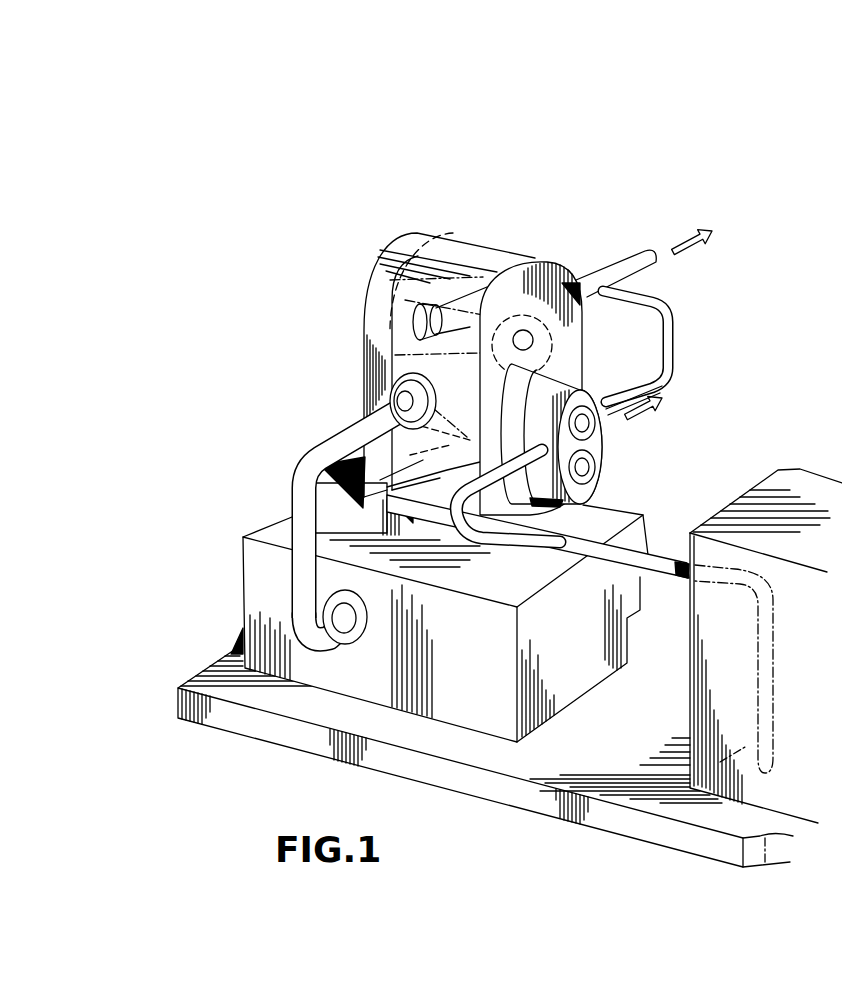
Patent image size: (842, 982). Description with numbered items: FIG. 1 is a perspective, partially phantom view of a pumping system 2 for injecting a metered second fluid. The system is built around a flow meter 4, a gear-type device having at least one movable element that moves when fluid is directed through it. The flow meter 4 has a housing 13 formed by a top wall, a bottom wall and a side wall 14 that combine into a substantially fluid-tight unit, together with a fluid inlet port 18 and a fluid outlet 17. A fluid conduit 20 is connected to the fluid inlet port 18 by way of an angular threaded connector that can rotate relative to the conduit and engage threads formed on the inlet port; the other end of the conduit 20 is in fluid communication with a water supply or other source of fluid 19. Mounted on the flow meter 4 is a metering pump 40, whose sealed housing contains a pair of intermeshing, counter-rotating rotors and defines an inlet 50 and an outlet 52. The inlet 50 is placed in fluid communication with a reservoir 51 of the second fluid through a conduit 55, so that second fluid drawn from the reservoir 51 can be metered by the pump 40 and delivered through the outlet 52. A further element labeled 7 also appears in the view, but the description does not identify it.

The pumping system 2 is at (495, 310).
The flow meter 4 is at (530, 247).
The guide plate 7 is at (640, 265).
The housing 13 is at (556, 260).
The side wall 14 is at (452, 235).
The fluid outlet 17 is at (580, 338).
The fluid inlet port 18 is at (392, 384).
The source of fluid 19 is at (483, 676).
The fluid conduit 20 is at (306, 463).
The metering pump 40 is at (612, 465).
The inlet 50 is at (556, 478).
The reservoir 51 is at (825, 696).
The outlet 52 is at (662, 385).
The conduit 55 is at (671, 577).